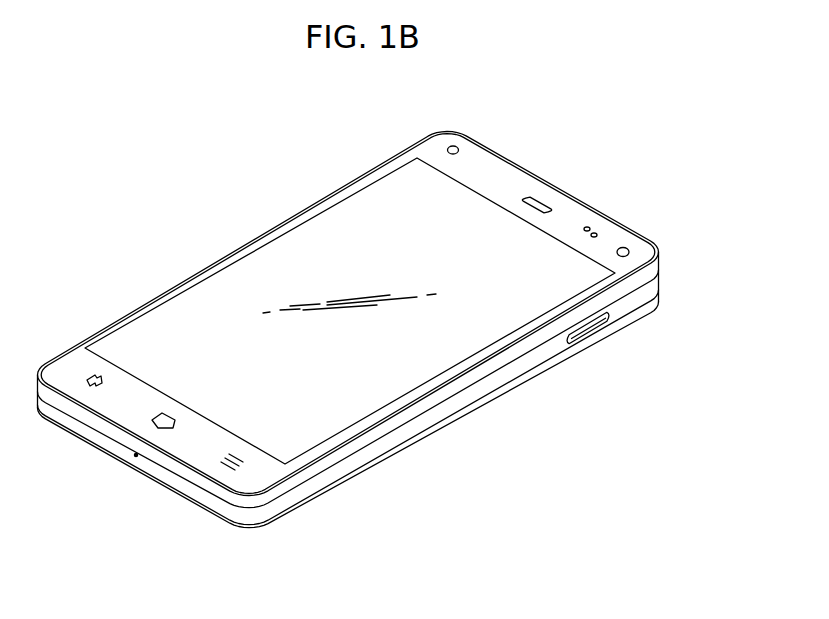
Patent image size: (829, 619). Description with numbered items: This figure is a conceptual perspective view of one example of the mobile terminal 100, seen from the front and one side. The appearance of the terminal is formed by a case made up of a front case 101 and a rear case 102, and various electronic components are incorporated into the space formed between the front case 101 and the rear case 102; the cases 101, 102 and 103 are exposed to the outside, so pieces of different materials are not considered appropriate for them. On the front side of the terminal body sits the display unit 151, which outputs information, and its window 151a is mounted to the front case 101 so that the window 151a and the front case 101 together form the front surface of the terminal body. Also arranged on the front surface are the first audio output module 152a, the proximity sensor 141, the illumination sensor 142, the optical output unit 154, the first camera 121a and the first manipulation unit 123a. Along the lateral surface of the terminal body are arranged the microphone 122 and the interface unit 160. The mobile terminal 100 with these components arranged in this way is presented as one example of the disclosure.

The mobile terminal 100 is at (236, 185).
The front case 101 is at (660, 268).
The rear case 102 is at (655, 287).
The case 103 is at (650, 305).
The display unit 151 is at (227, 300).
The window 151a is at (378, 213).
The optical output unit 154 is at (458, 150).
The first audio output module 152a is at (532, 198).
The illumination sensor 142 is at (587, 227).
The proximity sensor 141 is at (595, 233).
The first camera 121a is at (629, 250).
The interface unit 160 is at (591, 329).
The microphone 122 is at (134, 456).
The first manipulation unit 123a is at (220, 462).